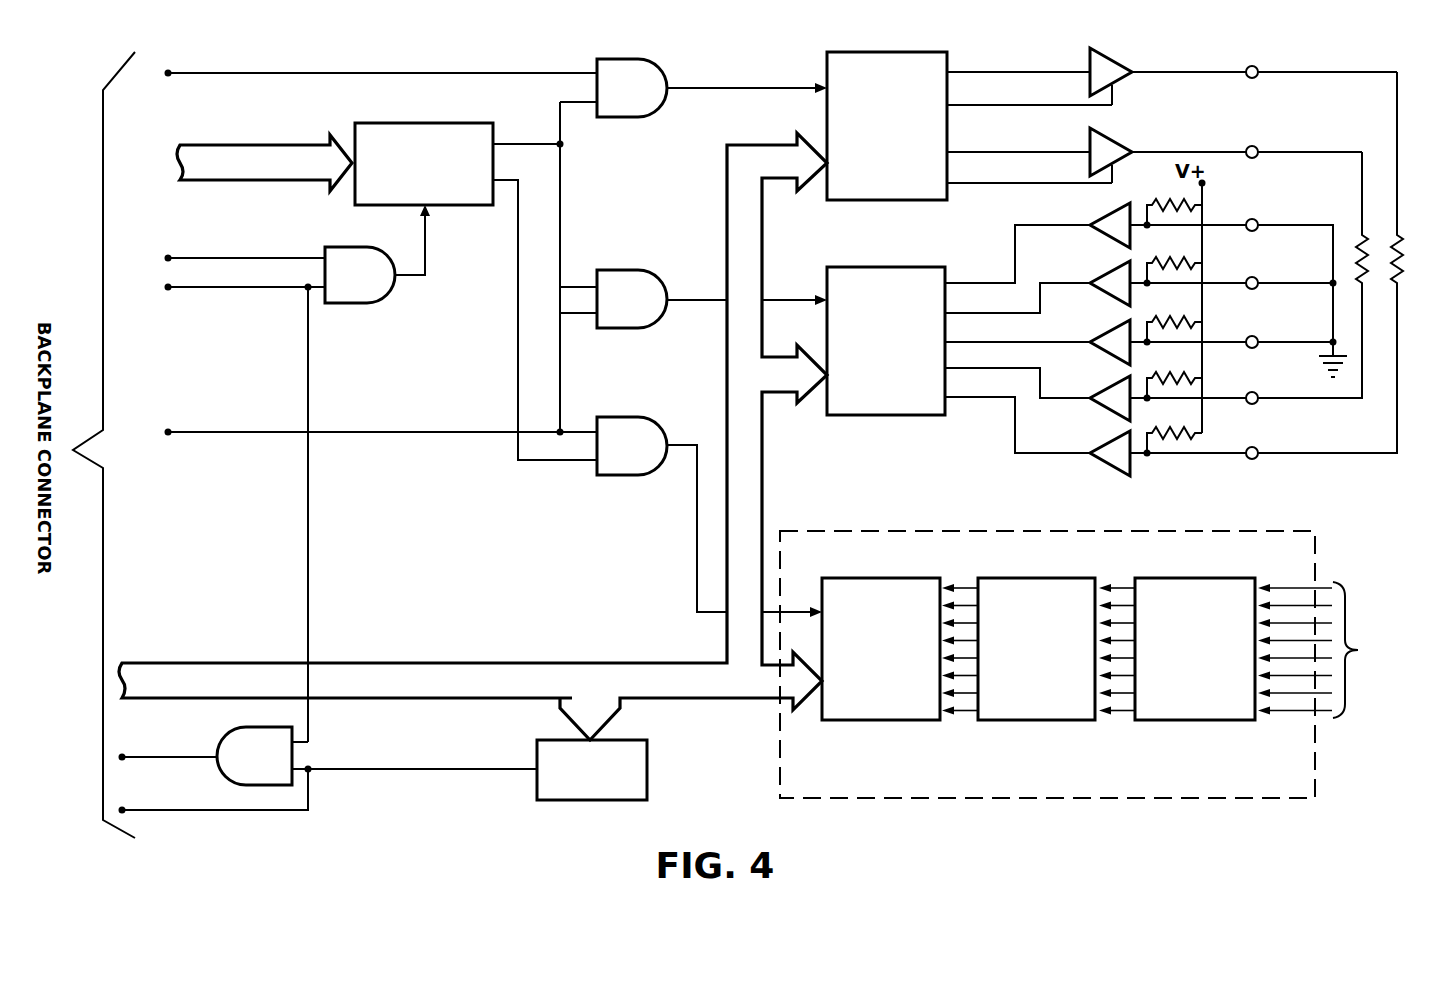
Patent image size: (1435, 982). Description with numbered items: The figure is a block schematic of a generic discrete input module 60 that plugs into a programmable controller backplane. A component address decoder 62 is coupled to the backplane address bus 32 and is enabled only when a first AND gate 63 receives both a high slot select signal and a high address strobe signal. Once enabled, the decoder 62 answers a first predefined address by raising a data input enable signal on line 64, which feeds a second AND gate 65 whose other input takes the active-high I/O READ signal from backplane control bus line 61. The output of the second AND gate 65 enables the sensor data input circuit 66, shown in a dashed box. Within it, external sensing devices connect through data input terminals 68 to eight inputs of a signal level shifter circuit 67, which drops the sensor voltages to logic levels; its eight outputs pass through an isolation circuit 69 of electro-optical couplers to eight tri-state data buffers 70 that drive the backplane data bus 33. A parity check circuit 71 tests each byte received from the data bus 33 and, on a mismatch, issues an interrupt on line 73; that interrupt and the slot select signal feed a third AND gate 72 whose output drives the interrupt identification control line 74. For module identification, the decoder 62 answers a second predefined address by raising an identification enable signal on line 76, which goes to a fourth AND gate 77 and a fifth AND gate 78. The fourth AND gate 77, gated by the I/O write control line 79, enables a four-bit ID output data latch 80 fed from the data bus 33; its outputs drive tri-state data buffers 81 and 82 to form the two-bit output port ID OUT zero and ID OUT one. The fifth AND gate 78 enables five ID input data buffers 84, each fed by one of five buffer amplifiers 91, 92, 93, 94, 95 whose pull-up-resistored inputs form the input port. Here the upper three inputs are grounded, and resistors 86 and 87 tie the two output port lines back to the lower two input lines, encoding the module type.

The backplane address bus 32 is at (180, 182).
The backplane data bus 33 is at (285, 660).
The discrete input module 60 is at (476, 797).
The backplane control bus line 61 is at (225, 434).
The component address decoder 62 is at (442, 123).
The first AND gate 63 is at (360, 303).
The data input enable line 64 is at (518, 376).
The second AND gate 65 is at (625, 478).
The sensor data input circuit 66 is at (1231, 786).
The signal level shifter circuit 67 is at (1205, 578).
The data input terminals 68 is at (1368, 722).
The isolation circuit 69 is at (1048, 578).
The tri-state data buffers 70 is at (880, 578).
The parity check circuit 71 is at (648, 785).
The third AND gate 72 is at (292, 756).
The interrupt line 73 is at (235, 812).
The interrupt identification control line 74 is at (202, 760).
The identification enable line 76 is at (530, 140).
The fourth AND gate 77 is at (622, 117).
The fifth AND gate 78 is at (622, 330).
The I/O write control line 79 is at (432, 72).
The ID output data latch 80 is at (827, 116).
The tri-state data buffer 81 is at (1114, 142).
The tri-state data buffer 82 is at (1116, 50).
The ID input data buffers 84 is at (893, 415).
The resistor 86 is at (1360, 240).
The resistor 87 is at (1397, 288).
The buffer amplifier 91 is at (1098, 448).
The buffer amplifier 92 is at (1098, 392).
The buffer amplifier 93 is at (1098, 336).
The buffer amplifier 94 is at (1098, 278).
The buffer amplifier 95 is at (1098, 220).